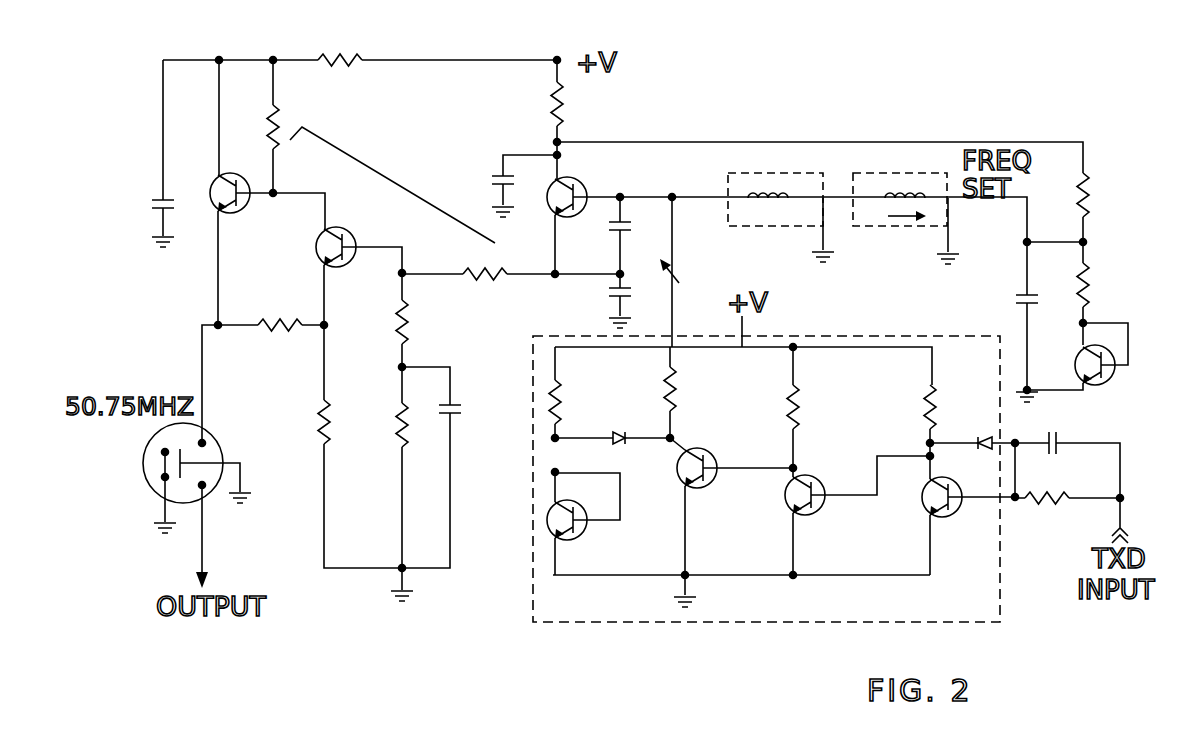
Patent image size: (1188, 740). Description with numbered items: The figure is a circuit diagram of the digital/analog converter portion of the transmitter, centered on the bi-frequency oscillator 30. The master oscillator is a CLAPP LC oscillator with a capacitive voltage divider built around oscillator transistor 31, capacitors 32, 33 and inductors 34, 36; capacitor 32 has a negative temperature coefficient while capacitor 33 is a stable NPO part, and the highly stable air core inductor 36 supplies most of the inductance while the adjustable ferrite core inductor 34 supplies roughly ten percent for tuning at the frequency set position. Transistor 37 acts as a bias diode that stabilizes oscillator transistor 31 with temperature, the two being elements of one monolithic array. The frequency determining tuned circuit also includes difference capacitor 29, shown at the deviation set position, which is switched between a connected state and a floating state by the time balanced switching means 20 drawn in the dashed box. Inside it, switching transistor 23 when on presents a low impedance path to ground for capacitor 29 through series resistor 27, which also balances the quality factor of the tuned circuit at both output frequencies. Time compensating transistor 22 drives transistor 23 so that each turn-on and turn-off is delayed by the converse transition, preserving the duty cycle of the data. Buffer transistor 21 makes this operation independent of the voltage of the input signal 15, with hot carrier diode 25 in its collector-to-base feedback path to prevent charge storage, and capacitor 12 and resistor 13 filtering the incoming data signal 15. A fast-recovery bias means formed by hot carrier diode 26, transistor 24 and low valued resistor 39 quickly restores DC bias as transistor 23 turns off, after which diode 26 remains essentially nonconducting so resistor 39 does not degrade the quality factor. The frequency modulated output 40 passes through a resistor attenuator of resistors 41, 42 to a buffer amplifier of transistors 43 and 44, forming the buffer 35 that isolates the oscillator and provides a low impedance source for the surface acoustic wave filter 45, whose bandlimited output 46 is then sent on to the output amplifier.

The capacitor 12 is at (1058, 441).
The resistor 13 is at (1050, 503).
The input signal 15 is at (1120, 516).
The time balanced switching means 20 is at (571, 626).
The buffer transistor 21 is at (927, 513).
The time compensating transistor 22 is at (790, 509).
The switching transistor 23 is at (686, 481).
The transistor 24 is at (579, 538).
The hot carrier diode 25 is at (983, 437).
The hot carrier diode 26 is at (618, 432).
The series resistor 27 is at (689, 392).
The difference capacitor 29 is at (679, 283).
The bi-frequency oscillator 30 is at (672, 130).
The oscillator transistor 31 is at (586, 187).
The capacitor 32 is at (613, 237).
The capacitor 33 is at (628, 285).
The adjustable ferrite core inductor 34 is at (913, 195).
The buffer 35 is at (387, 173).
The air core inductor 36 is at (789, 195).
The transistor 37 is at (1110, 378).
The resistor 39 is at (572, 392).
The frequency modulated output 40 is at (535, 277).
The resistor 41 is at (454, 260).
The resistor 42 is at (385, 320).
The transistor 43 is at (359, 234).
The transistor 44 is at (241, 209).
The surface acoustic wave filter 45 is at (144, 471).
The bandlimited output 46 is at (198, 556).